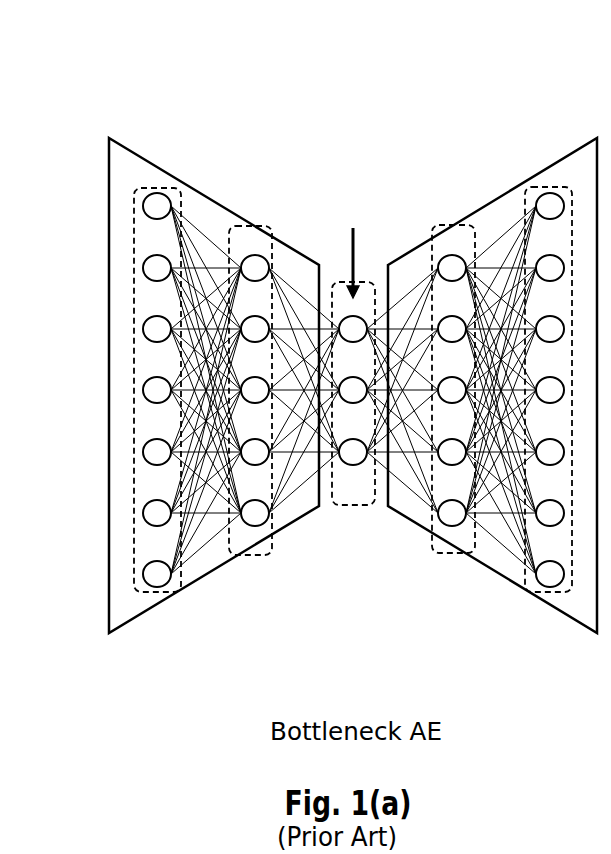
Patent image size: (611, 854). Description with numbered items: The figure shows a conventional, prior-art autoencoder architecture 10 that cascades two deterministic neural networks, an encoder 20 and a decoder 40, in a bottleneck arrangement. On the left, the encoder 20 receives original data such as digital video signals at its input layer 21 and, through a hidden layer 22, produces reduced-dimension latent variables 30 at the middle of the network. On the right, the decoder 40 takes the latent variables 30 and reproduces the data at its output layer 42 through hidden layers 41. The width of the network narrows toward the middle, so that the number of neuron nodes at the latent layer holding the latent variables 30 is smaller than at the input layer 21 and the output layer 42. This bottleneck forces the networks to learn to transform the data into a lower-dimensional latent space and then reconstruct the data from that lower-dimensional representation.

The conventional AE architecture 10 is at (83, 44).
The encoder 20 is at (157, 165).
The input layer 21 is at (130, 220).
The hidden layer 22 is at (253, 218).
The latent variables 30 is at (353, 510).
The decoder 40 is at (490, 202).
The hidden layers 41 is at (447, 223).
The output layer 42 is at (547, 186).